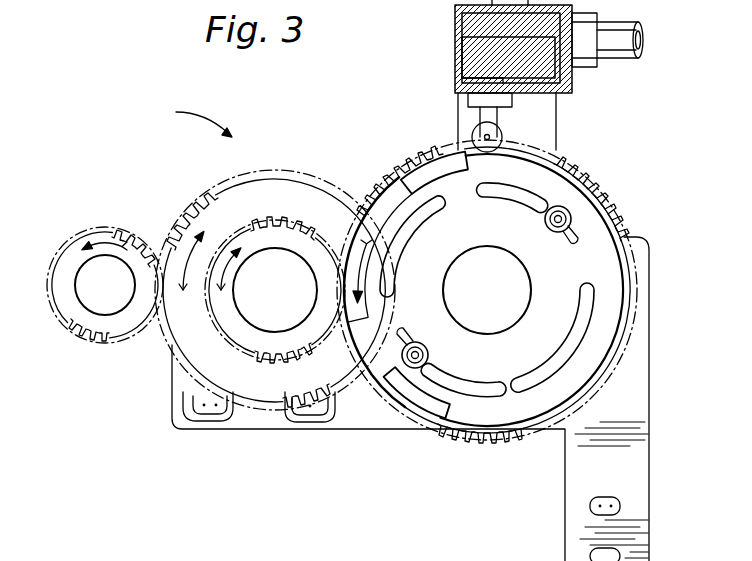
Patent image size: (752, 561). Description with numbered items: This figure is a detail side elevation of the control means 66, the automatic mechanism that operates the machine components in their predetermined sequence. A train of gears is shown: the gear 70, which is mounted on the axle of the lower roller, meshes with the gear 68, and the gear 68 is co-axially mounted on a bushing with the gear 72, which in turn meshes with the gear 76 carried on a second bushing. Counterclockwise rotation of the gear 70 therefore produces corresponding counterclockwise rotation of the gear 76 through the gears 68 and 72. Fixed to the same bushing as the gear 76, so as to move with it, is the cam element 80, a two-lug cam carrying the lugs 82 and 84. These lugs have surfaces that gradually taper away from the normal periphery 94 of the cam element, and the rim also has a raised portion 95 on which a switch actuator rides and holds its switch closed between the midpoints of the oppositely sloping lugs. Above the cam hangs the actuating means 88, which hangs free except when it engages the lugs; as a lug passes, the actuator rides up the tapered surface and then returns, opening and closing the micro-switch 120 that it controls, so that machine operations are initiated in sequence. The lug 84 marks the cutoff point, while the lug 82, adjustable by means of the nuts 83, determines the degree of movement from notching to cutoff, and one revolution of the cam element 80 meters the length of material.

The control means 66 is at (187, 119).
The gear 68 is at (188, 205).
The gear 70 is at (88, 232).
The gear 72 is at (285, 189).
The gear 76 is at (403, 178).
The cam element 80 is at (607, 245).
The lug 82 is at (418, 430).
The nuts 83 is at (552, 228).
The lug 84 is at (437, 168).
The actuating means 88 is at (482, 118).
The periphery 94 is at (580, 172).
The raised portion 95 is at (375, 200).
The micro-switch 120 is at (487, 36).